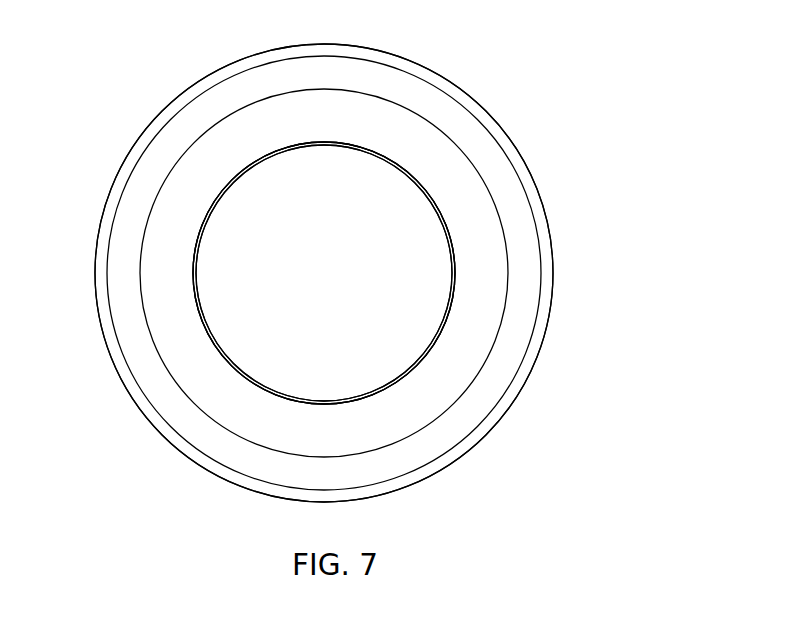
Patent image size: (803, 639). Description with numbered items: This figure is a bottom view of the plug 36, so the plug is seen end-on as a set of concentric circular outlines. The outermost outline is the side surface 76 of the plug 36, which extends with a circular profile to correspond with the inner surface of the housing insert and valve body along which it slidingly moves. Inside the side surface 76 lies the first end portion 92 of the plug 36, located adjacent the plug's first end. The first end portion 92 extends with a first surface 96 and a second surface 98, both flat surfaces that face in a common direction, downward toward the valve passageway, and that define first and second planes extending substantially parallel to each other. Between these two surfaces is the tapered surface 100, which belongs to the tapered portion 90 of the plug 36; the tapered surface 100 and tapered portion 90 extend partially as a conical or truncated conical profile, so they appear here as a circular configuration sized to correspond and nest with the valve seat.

The plug 36 is at (453, 75).
The side surface 76 is at (552, 247).
The tapered portion 90 is at (257, 390).
The first end portion 92 is at (272, 170).
The first surface 96 is at (480, 317).
The second surface 98 is at (388, 323).
The tapered surface 100 is at (427, 187).